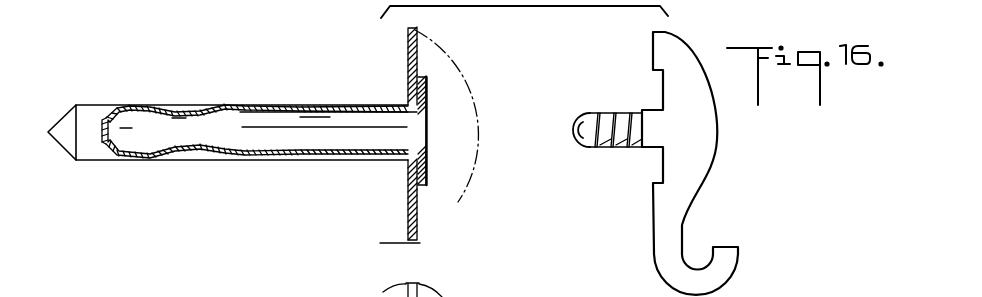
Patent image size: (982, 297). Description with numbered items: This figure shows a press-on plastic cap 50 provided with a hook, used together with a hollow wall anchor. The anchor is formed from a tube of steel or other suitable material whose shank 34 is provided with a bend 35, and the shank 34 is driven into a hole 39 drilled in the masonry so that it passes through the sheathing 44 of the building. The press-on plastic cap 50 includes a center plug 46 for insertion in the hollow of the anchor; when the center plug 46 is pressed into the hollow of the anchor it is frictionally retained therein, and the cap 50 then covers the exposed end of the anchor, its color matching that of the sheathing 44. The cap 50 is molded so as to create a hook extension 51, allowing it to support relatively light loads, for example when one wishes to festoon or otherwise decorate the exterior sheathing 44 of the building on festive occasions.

The shank 34 is at (312, 155).
The bend 35 is at (227, 163).
The hole 39 is at (89, 157).
The sheathing 44 is at (418, 218).
The press-on plastic cap 50 is at (465, 72).
The hook extension 51 is at (735, 258).
The center plug 46 is at (611, 110).